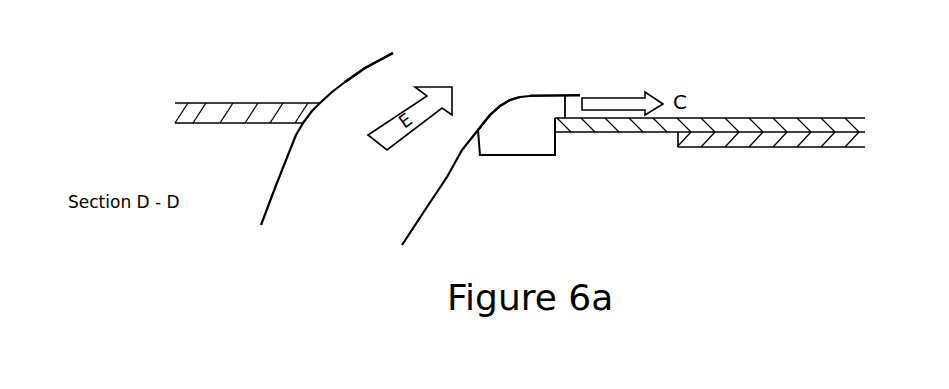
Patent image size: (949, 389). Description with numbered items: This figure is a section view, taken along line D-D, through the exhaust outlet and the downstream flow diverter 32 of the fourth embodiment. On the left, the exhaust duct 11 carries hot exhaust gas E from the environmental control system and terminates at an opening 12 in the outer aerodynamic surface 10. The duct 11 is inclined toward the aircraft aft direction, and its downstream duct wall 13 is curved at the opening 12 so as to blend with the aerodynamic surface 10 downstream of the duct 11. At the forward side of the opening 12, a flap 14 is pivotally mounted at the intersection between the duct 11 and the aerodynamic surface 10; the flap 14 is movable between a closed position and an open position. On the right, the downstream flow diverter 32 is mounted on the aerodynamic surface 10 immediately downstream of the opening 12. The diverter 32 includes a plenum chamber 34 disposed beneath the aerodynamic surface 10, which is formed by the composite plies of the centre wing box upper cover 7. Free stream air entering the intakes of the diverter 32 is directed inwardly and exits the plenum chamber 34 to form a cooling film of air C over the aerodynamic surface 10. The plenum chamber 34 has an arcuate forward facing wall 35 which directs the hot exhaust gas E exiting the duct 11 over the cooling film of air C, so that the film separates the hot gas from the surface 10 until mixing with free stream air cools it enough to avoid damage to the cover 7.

The centre wing box upper cover 7 is at (855, 127).
The outer aerodynamic surface 10 is at (221, 97).
The exhaust duct 11 is at (287, 163).
The opening 12 is at (339, 119).
The downstream duct wall 13 is at (452, 173).
The flap 14 is at (358, 73).
The downstream flow diverter 32 is at (558, 73).
The plenum chamber 34 is at (528, 145).
The arcuate forward facing wall 35 is at (512, 100).